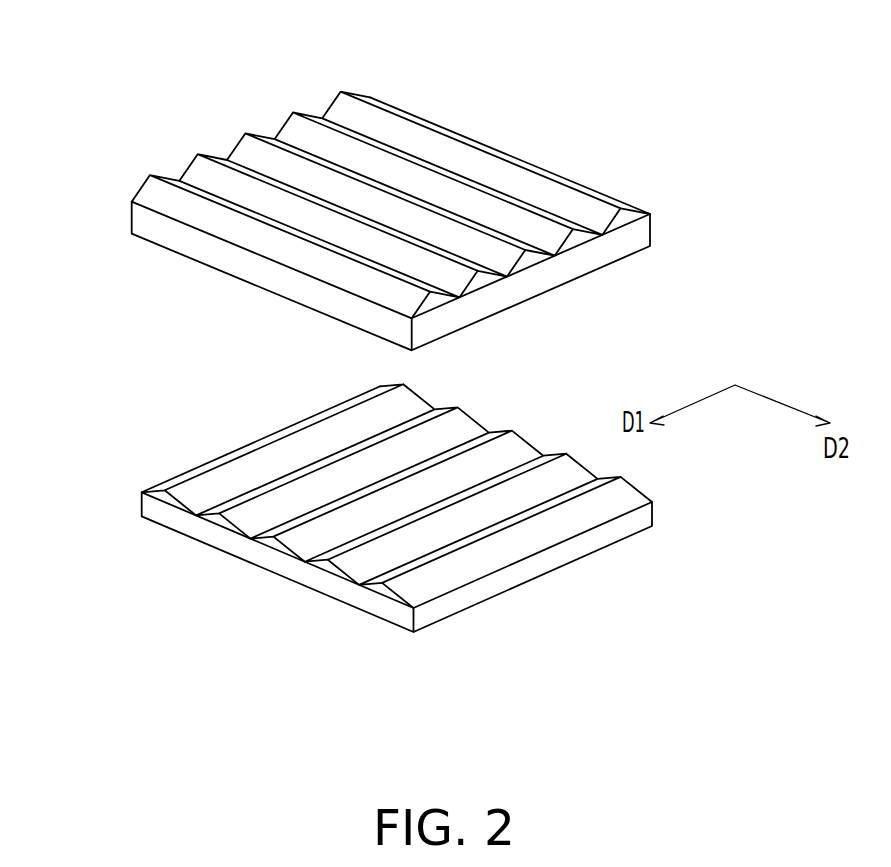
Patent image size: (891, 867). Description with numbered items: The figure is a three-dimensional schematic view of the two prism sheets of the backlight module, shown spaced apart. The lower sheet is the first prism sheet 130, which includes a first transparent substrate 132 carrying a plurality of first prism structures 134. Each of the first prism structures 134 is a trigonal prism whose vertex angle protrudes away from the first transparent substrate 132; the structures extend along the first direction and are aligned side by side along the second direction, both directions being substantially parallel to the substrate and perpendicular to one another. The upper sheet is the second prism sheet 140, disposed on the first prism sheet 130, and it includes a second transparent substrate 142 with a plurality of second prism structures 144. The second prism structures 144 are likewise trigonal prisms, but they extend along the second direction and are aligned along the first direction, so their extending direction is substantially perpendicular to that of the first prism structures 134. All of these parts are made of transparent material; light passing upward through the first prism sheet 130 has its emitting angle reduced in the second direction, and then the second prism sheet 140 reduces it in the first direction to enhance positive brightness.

The first prism sheet 130 is at (397, 566).
The first transparent substrate 132 is at (312, 575).
The first prism structures 134 is at (385, 590).
The second prism sheet 140 is at (474, 221).
The second transparent substrate 142 is at (640, 234).
The second prism structures 144 is at (635, 212).